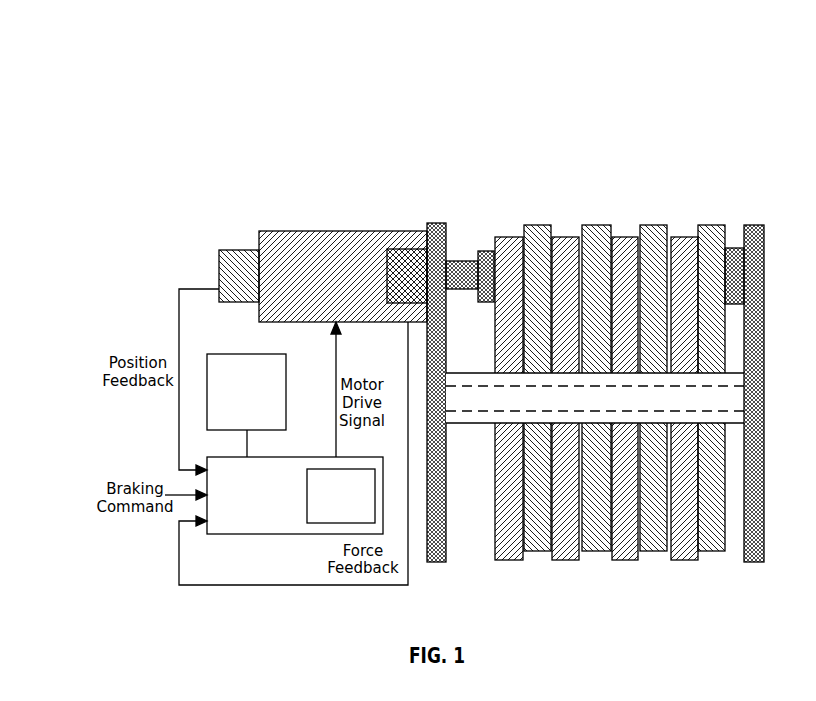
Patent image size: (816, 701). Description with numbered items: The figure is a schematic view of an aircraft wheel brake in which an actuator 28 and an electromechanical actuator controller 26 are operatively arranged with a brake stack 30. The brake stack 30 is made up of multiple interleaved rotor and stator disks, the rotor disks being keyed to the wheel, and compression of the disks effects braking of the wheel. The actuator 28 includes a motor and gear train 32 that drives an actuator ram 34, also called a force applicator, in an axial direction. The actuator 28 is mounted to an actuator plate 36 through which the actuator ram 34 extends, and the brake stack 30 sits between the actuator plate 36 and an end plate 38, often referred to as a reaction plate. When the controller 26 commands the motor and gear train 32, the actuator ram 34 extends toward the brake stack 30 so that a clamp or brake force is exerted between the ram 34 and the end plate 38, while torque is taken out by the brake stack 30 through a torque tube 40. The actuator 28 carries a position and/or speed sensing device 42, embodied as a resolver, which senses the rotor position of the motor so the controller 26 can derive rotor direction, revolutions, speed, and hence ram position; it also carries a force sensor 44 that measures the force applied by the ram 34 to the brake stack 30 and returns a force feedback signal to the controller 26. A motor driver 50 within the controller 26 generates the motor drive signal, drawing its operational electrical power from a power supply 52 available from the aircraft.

The electromechanical actuator controller 26 is at (235, 518).
The actuator 28 is at (226, 86).
The brake stack 30 is at (597, 195).
The motor and gear train 32 is at (259, 231).
The actuator ram 34 is at (461, 260).
The actuator plate 36 is at (437, 222).
The end plate 38 is at (752, 225).
The torque tube 40 is at (473, 425).
The position and/or speed sensing device 42 is at (219, 273).
The force sensor 44 is at (388, 250).
The motor driver 50 is at (325, 512).
The power supply 52 is at (280, 378).